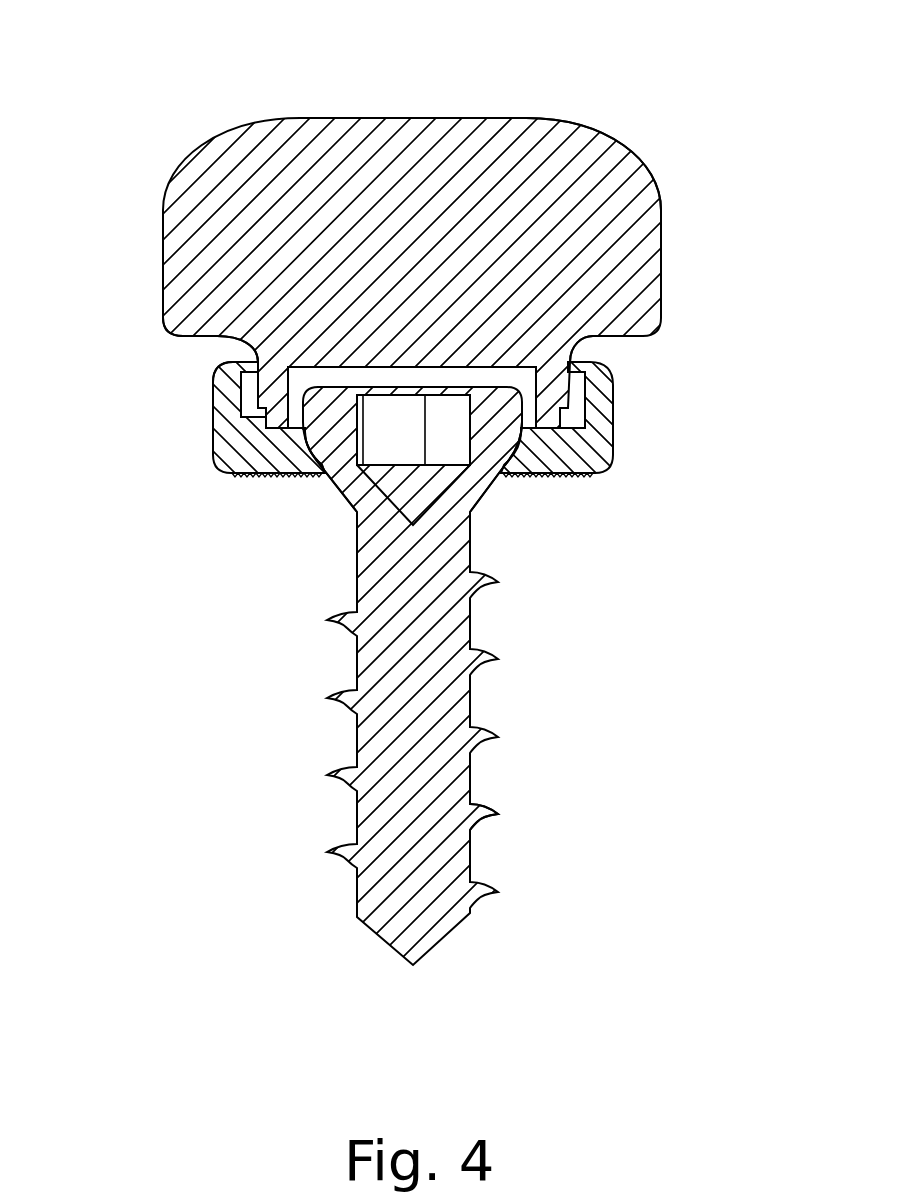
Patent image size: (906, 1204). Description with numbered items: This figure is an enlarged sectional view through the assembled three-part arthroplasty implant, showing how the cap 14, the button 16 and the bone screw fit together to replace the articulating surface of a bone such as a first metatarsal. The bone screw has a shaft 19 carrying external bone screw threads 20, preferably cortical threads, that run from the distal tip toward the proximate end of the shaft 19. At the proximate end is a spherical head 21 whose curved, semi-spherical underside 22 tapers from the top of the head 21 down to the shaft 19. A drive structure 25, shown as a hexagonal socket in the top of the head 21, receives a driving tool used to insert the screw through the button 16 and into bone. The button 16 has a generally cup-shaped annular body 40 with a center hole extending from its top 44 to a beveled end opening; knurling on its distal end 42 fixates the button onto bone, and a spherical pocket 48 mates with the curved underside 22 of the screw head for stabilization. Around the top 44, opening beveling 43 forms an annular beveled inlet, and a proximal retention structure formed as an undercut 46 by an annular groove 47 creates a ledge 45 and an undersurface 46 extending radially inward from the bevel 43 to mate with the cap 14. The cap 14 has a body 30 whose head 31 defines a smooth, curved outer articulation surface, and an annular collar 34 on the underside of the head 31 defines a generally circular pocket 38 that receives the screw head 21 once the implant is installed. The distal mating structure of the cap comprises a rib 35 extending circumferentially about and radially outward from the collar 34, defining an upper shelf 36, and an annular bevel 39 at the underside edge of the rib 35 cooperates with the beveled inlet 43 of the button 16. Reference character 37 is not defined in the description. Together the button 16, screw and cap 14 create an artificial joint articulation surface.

The cap 14 is at (676, 79).
The button 16 is at (338, 670).
The shaft 19 is at (415, 783).
The bone screw threads 20 is at (480, 815).
The spherical head 21 is at (508, 458).
The curved underside 22 is at (360, 498).
The drive structure 25 is at (485, 437).
The body 30 is at (148, 258).
The head 31 is at (643, 200).
The annular collar 34 is at (587, 474).
The rib 35 is at (603, 395).
The upper shelf 36 is at (580, 374).
The groove 37 is at (612, 345).
The circular pocket 38 is at (385, 372).
The annular bevel 39 is at (600, 425).
The annular body 40 is at (632, 452).
The distal end 42 is at (265, 476).
The opening beveling 43 is at (197, 336).
The top 44 is at (213, 370).
The ledge 45 is at (228, 350).
The undercut 46 is at (240, 400).
The annular groove 47 is at (250, 418).
The spherical pocket 48 is at (322, 476).